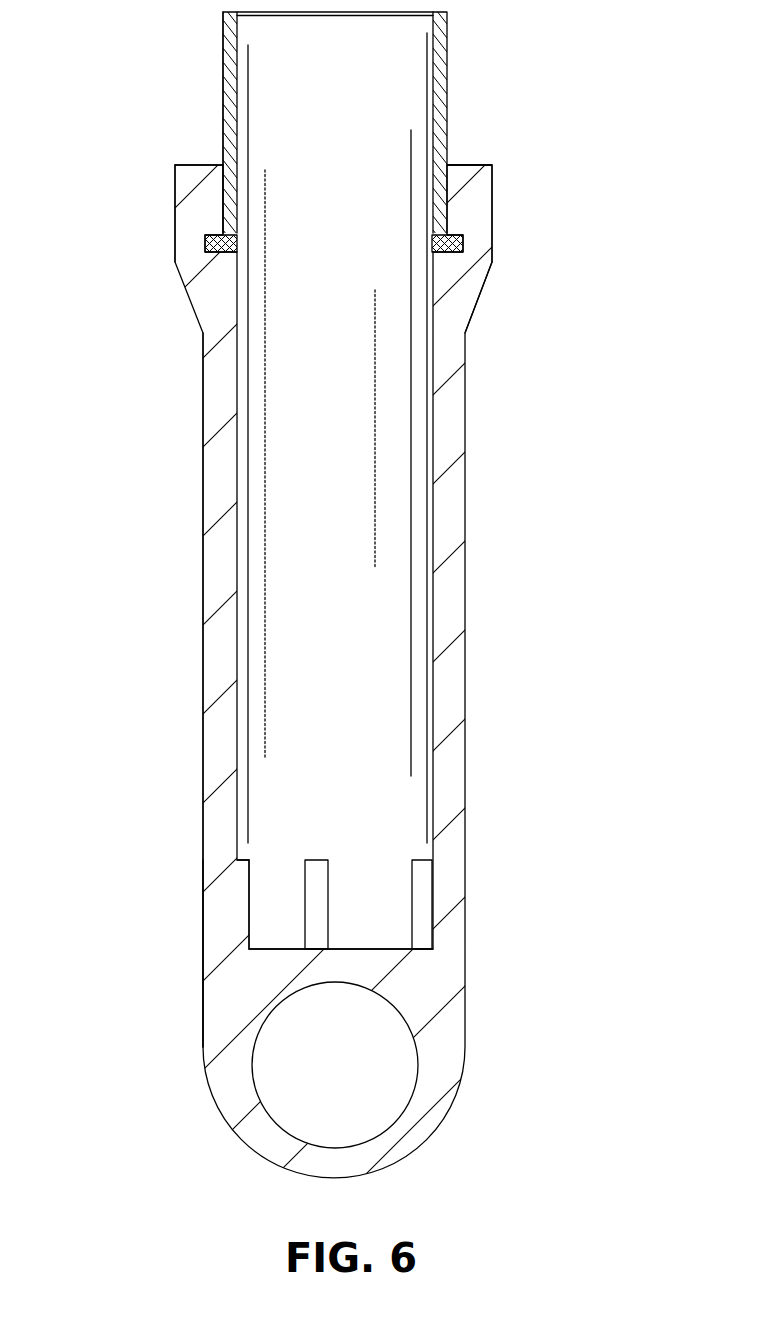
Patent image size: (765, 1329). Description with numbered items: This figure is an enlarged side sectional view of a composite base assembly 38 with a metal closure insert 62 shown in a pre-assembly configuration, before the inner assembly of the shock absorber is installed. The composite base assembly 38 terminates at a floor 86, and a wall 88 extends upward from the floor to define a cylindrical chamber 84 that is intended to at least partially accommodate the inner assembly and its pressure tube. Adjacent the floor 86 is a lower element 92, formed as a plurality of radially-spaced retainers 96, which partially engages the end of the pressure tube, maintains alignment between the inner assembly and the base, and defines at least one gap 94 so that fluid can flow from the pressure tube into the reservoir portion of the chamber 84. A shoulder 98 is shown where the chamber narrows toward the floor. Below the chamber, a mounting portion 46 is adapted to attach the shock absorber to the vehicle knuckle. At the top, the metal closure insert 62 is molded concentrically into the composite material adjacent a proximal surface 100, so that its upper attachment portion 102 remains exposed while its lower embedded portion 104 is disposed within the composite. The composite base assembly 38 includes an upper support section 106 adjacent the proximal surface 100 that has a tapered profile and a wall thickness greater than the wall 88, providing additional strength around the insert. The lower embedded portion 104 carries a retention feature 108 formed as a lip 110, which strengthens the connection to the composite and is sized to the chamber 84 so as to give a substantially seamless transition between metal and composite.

The composite base assembly 38 is at (467, 550).
The mounting portion 46 is at (447, 1023).
The metal closure insert 62 is at (447, 43).
The chamber 84 is at (341, 507).
The floor 86 is at (365, 947).
The wall 88 is at (223, 563).
The lower element 92 is at (247, 895).
The gap 94 is at (418, 921).
The radially-spaced retainers 96 is at (228, 922).
The shoulder 98 is at (244, 858).
The proximal surface 100 is at (463, 165).
The upper attachment portion 102 is at (233, 47).
The lower embedded portion 104 is at (220, 245).
The upper support section 106 is at (477, 208).
The retention feature 108 is at (450, 256).
The lip 110 is at (462, 242).